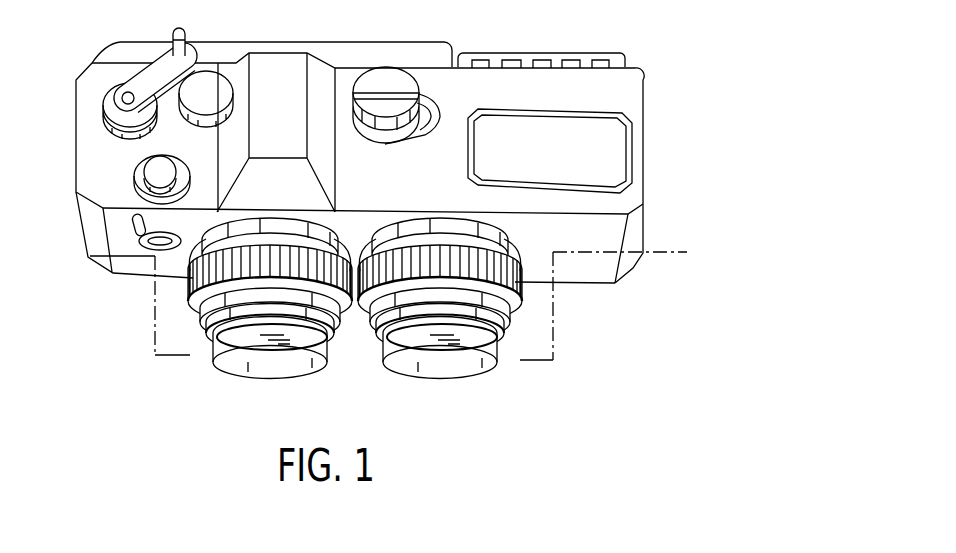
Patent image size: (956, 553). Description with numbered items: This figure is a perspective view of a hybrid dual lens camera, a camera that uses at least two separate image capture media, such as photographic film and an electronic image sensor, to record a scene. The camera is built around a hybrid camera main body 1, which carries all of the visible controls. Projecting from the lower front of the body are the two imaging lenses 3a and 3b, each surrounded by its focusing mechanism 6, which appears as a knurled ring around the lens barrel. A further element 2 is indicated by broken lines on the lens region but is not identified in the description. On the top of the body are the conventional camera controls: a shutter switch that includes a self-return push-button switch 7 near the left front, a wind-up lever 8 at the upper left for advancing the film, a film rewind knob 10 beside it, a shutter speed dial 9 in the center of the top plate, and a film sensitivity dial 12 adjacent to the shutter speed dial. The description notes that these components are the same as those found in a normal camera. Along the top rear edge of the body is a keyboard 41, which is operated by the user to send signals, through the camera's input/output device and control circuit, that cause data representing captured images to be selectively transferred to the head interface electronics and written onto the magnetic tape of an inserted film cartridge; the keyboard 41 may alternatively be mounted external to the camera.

The hybrid camera main body 1 is at (647, 88).
The lens unit section 2 is at (88, 256).
The imaging lens 3a is at (277, 347).
The imaging lens 3b is at (440, 348).
The focusing mechanism 6 is at (467, 262).
The self-return push-button switch 7 is at (153, 163).
The wind-up lever 8 is at (157, 58).
The shutter speed dial 9 is at (383, 80).
The film rewind knob 10 is at (210, 82).
The film sensitivity dial 12 is at (430, 98).
The keyboard 41 is at (557, 55).